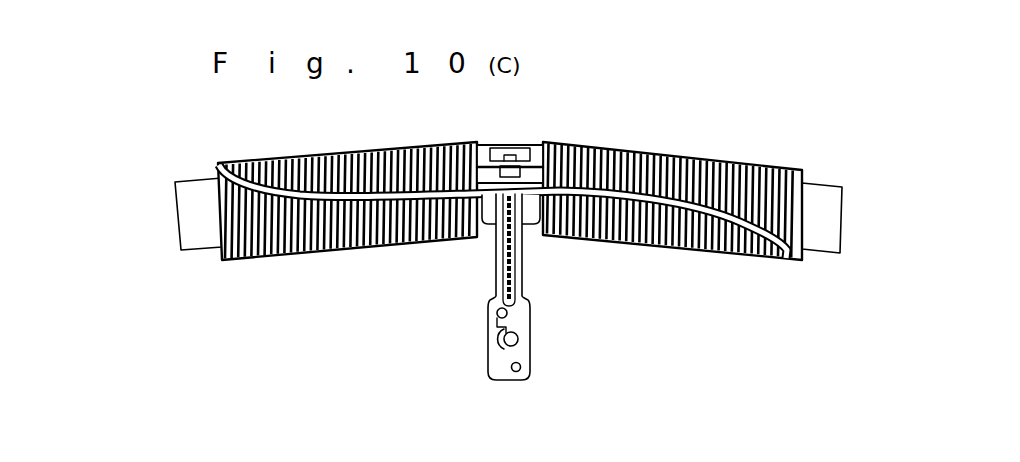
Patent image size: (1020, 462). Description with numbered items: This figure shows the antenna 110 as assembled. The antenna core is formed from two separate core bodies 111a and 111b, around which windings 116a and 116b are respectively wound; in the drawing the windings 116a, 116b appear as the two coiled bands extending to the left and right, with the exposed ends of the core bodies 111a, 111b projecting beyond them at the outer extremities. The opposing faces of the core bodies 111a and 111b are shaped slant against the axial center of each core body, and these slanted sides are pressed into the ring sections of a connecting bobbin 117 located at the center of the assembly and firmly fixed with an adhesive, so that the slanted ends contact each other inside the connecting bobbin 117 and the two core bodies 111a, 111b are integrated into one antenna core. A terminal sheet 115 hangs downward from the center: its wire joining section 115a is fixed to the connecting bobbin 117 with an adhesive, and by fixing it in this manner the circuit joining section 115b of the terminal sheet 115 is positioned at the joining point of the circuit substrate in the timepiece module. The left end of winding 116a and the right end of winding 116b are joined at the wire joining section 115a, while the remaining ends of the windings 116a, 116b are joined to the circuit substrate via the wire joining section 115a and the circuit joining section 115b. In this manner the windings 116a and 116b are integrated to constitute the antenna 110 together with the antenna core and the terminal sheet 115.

The antenna 110 is at (693, 136).
The core body 111a is at (817, 203).
The core body 111b is at (197, 228).
The terminal sheet 115 is at (522, 288).
The wire joining section 115a is at (537, 146).
The circuit joining section 115b is at (527, 358).
The winding 116a is at (692, 236).
The winding 116b is at (286, 237).
The connecting bobbin 117 is at (500, 143).